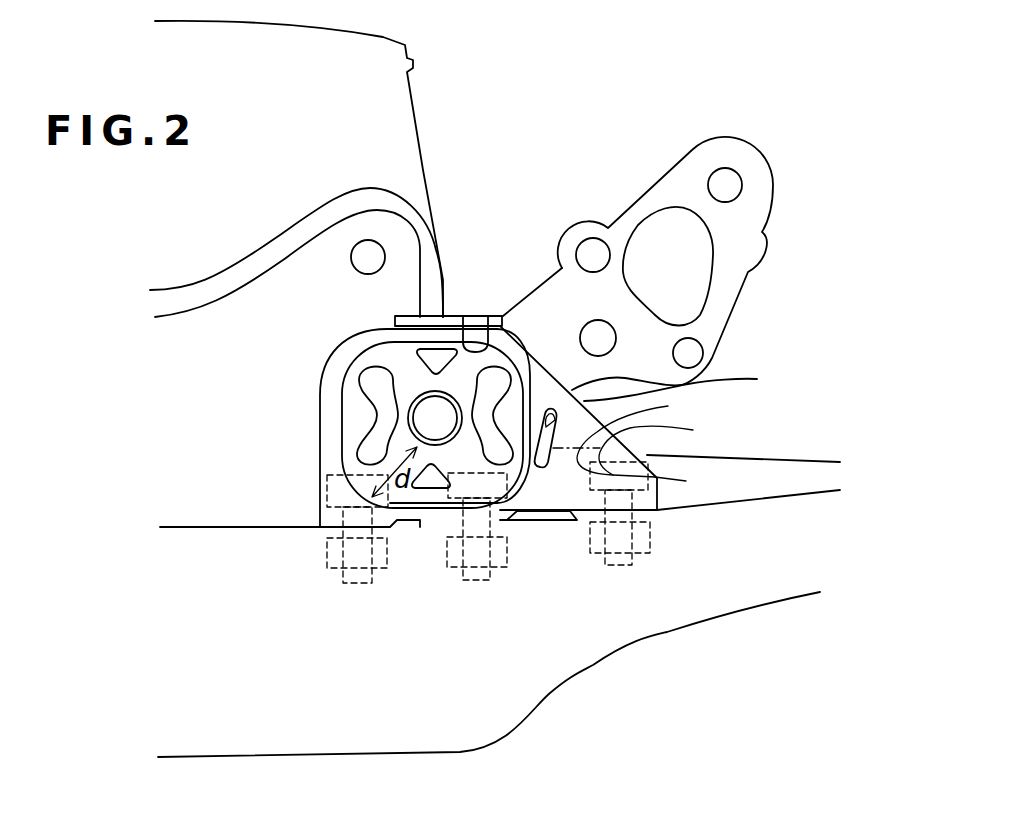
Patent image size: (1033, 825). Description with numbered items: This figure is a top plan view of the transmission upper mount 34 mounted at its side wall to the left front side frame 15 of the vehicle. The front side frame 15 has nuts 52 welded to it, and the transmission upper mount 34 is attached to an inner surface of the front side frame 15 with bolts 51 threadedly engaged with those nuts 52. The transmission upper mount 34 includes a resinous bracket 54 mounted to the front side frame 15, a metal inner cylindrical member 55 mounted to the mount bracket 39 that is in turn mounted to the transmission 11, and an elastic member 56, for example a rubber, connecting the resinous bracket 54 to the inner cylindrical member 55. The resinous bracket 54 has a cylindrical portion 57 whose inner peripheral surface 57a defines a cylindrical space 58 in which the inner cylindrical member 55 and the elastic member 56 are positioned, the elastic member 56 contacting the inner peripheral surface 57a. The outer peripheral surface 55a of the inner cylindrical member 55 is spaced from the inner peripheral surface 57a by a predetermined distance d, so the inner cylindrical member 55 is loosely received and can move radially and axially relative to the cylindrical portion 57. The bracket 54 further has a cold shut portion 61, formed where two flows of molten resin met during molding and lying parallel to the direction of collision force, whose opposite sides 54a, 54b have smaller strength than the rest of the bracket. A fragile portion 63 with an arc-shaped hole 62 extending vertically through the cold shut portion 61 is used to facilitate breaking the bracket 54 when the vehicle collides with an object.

The transmission 11 is at (558, 148).
The front side frame 15 is at (593, 665).
The transmission upper mount 34 is at (315, 430).
The mount bracket 39 is at (752, 137).
The bolts 51 is at (327, 492).
The nuts 52 is at (333, 568).
The resinous bracket 54 is at (670, 418).
The side of cold shut portion 54a is at (649, 436).
The side of cold shut portion 54b is at (696, 488).
The inner cylindrical member 55 is at (410, 396).
The outer peripheral surface 55a is at (440, 392).
The elastic member 56 is at (356, 407).
The cylindrical portion 57 is at (503, 314).
The inner peripheral surface 57a is at (400, 317).
The space 58 is at (477, 316).
The cold shut portion 61 is at (693, 430).
The hole 62 is at (548, 405).
The fragile portion 63 is at (528, 477).